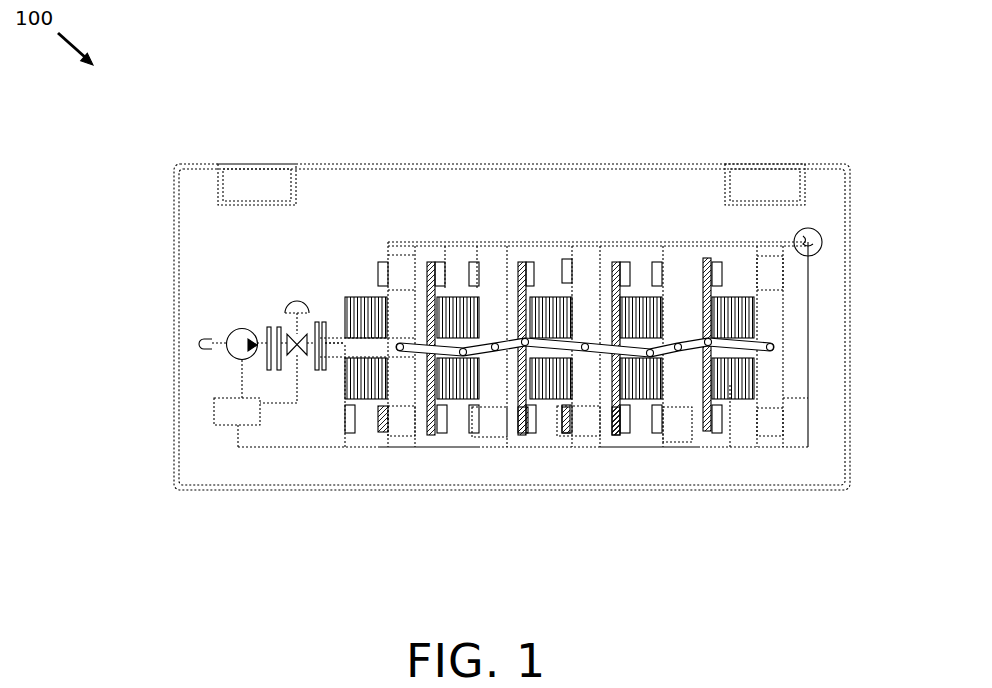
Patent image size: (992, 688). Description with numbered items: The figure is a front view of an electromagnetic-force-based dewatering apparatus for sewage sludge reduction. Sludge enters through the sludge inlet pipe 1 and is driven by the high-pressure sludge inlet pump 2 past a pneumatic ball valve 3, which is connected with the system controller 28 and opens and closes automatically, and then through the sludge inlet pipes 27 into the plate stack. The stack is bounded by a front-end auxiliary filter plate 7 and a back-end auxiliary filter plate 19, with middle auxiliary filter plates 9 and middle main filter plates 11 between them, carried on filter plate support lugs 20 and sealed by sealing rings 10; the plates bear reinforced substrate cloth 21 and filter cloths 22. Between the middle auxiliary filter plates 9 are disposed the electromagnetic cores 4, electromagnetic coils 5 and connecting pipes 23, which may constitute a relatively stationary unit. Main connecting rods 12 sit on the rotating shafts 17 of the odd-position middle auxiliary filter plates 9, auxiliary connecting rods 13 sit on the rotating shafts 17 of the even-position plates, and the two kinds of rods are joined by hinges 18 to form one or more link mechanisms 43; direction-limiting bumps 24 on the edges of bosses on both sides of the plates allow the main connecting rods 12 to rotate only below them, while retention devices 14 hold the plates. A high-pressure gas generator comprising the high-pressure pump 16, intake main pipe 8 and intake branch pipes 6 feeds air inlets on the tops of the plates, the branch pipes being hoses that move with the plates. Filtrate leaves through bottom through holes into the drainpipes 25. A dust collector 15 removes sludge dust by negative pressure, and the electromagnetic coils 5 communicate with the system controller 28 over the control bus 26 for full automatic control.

The sludge inlet pipe 1 is at (203, 343).
The high-pressure sludge inlet pump 2 is at (232, 335).
The pneumatic ball valve 3 is at (268, 338).
The electromagnetic core 4 is at (342, 302).
The electromagnetic coil 5 is at (347, 297).
The intake branch pipe 6 is at (402, 310).
The front-end auxiliary filter plate 7 is at (380, 277).
The intake main pipe 8 is at (440, 242).
The middle auxiliary filter plate 9 is at (495, 308).
The sealing ring 10 is at (527, 292).
The middle main filter plate 11 is at (530, 340).
The main connecting rod 12 is at (513, 343).
The auxiliary connecting rod 13 is at (557, 333).
The retention device 14 is at (650, 353).
The dust collector 15 is at (777, 187).
The high-pressure pump 16 is at (818, 232).
The rotating shaft 17 is at (700, 338).
The hinge 18 is at (705, 343).
The back-end auxiliary filter plate 19 is at (770, 400).
The filter plate support lug 20 is at (777, 433).
The reinforced substrate cloth 21 is at (622, 437).
The filter cloth 22 is at (618, 437).
The connecting pipe 23 is at (560, 385).
The direction-limiting bump 24 is at (490, 352).
The drainpipe 25 is at (473, 410).
The control bus 26 is at (435, 447).
The sludge inlet pipe 27 is at (340, 352).
The system controller 28 is at (235, 418).
The link mechanism 43 is at (660, 191).